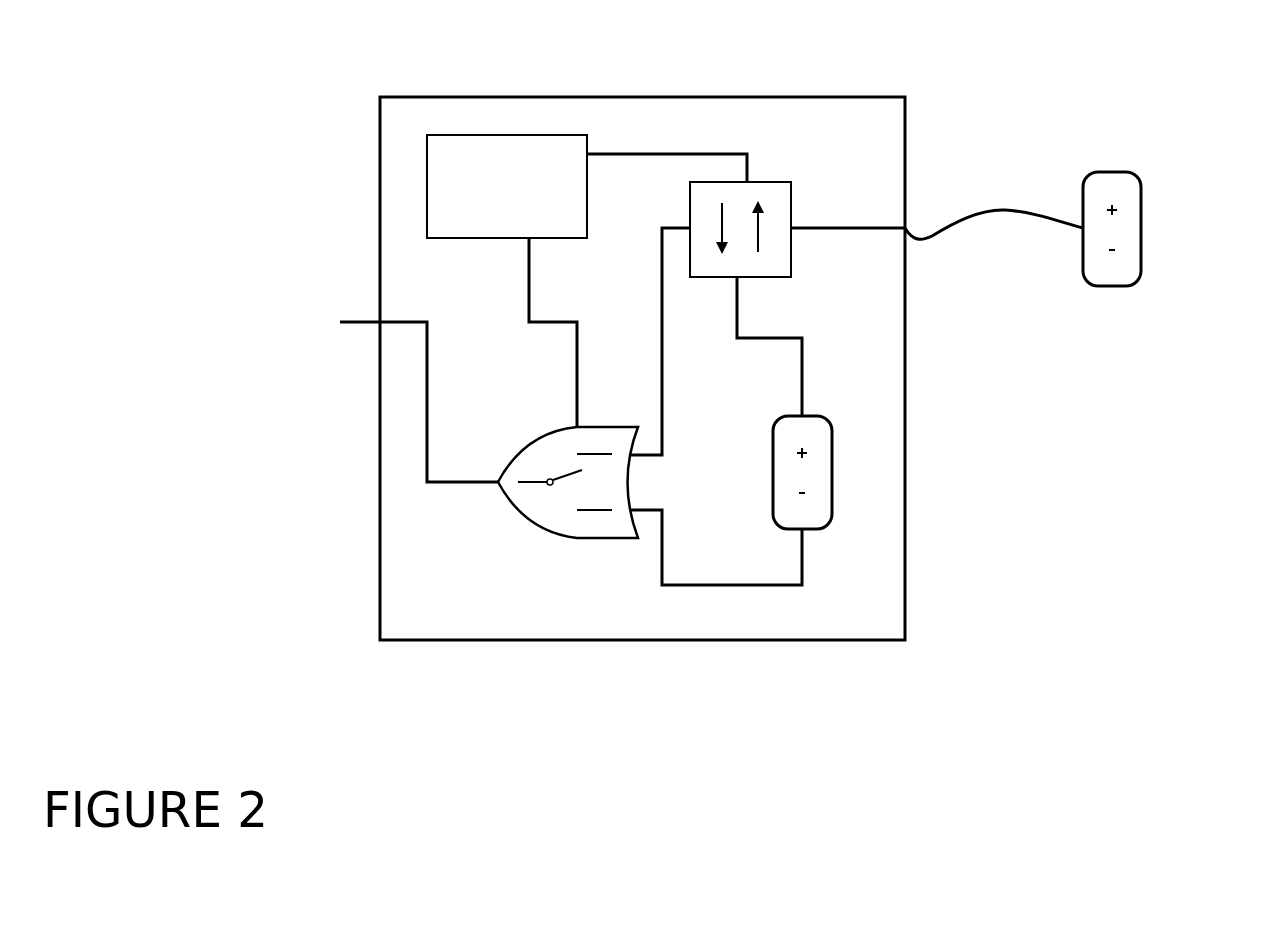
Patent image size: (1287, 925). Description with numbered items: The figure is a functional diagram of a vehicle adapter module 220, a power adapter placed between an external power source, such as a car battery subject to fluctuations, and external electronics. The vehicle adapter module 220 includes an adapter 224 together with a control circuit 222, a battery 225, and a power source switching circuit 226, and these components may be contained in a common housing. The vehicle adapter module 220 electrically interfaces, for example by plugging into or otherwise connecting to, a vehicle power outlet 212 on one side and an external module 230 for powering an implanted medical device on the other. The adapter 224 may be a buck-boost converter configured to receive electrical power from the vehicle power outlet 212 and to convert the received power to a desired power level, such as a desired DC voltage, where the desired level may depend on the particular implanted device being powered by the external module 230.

The vehicle power outlet 212 is at (1159, 202).
The vehicle adapter module 220 is at (380, 97).
The control circuit 222 is at (490, 135).
The adapter 224 is at (791, 182).
The battery 225 is at (832, 416).
The power source switching circuit 226 is at (538, 531).
The external module 230 is at (392, 396).